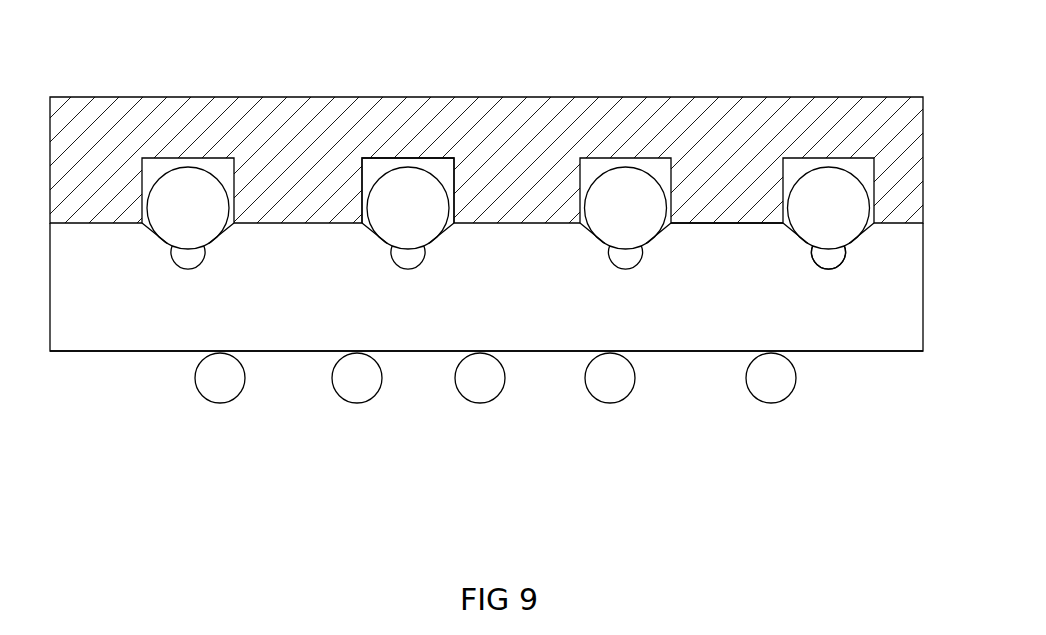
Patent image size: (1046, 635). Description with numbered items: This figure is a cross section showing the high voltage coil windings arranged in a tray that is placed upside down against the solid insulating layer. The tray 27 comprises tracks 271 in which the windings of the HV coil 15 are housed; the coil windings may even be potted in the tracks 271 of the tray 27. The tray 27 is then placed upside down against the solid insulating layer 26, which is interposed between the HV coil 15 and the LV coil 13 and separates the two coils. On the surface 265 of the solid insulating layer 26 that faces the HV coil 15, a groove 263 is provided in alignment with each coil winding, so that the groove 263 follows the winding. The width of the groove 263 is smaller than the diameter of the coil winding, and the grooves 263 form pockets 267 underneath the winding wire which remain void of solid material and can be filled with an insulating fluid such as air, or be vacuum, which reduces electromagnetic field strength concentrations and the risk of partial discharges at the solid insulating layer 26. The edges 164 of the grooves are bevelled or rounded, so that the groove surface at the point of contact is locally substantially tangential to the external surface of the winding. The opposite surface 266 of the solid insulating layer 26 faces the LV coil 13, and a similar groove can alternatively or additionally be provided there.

The tray 27 is at (128, 97).
The tracks 271 is at (430, 158).
The HV coil 15 is at (625, 165).
The surface 265 is at (720, 218).
The edges 164 is at (658, 232).
The groove 263 is at (840, 266).
The pockets 267 is at (829, 258).
The opposite surface 266 is at (548, 352).
The LV coil 13 is at (221, 405).
The solid insulating layer 26 is at (92, 312).